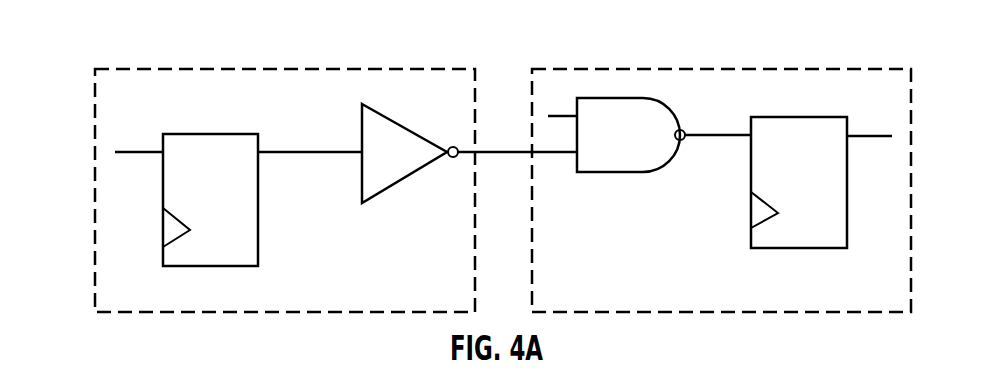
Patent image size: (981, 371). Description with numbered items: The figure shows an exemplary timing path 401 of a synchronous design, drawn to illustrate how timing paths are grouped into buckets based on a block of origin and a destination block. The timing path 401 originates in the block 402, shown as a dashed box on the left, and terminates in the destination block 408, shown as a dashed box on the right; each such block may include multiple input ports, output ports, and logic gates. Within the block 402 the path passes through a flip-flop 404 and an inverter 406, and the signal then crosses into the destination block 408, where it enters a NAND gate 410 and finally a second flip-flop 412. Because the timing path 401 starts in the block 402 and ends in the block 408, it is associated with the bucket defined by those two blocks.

The timing path 401 is at (306, 82).
The block 402 is at (285, 171).
The first flip-flop 404 is at (186, 182).
The inverter 406 is at (358, 150).
The destination block 408 is at (721, 173).
The NAND gate 410 is at (649, 150).
The second flip-flop 412 is at (808, 163).